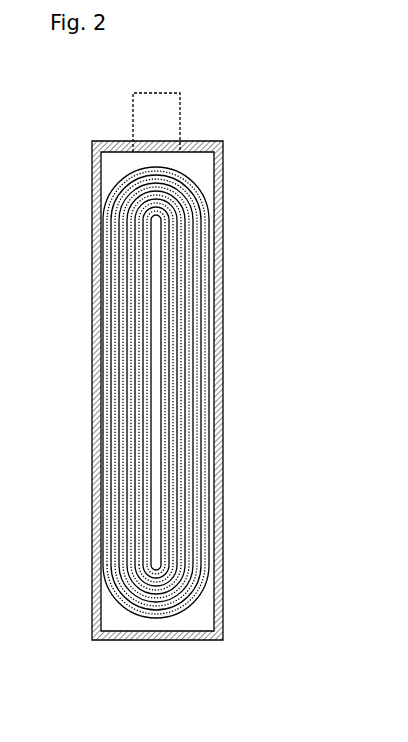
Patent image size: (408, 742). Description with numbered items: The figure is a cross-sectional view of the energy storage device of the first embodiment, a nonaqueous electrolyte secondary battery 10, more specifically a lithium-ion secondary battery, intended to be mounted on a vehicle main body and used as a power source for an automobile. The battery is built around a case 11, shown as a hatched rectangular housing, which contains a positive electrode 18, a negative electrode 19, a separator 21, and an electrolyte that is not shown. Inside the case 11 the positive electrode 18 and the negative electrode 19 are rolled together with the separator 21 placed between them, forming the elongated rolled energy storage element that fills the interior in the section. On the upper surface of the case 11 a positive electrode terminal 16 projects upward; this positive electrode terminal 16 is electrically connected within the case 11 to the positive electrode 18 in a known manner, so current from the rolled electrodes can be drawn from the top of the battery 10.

The nonaqueous electrolyte secondary battery 10 is at (235, 136).
The case 11 is at (181, 640).
The positive electrode terminal 16 is at (158, 96).
The positive electrode 18 is at (210, 270).
The negative electrode 19 is at (198, 312).
The separator 21 is at (202, 292).